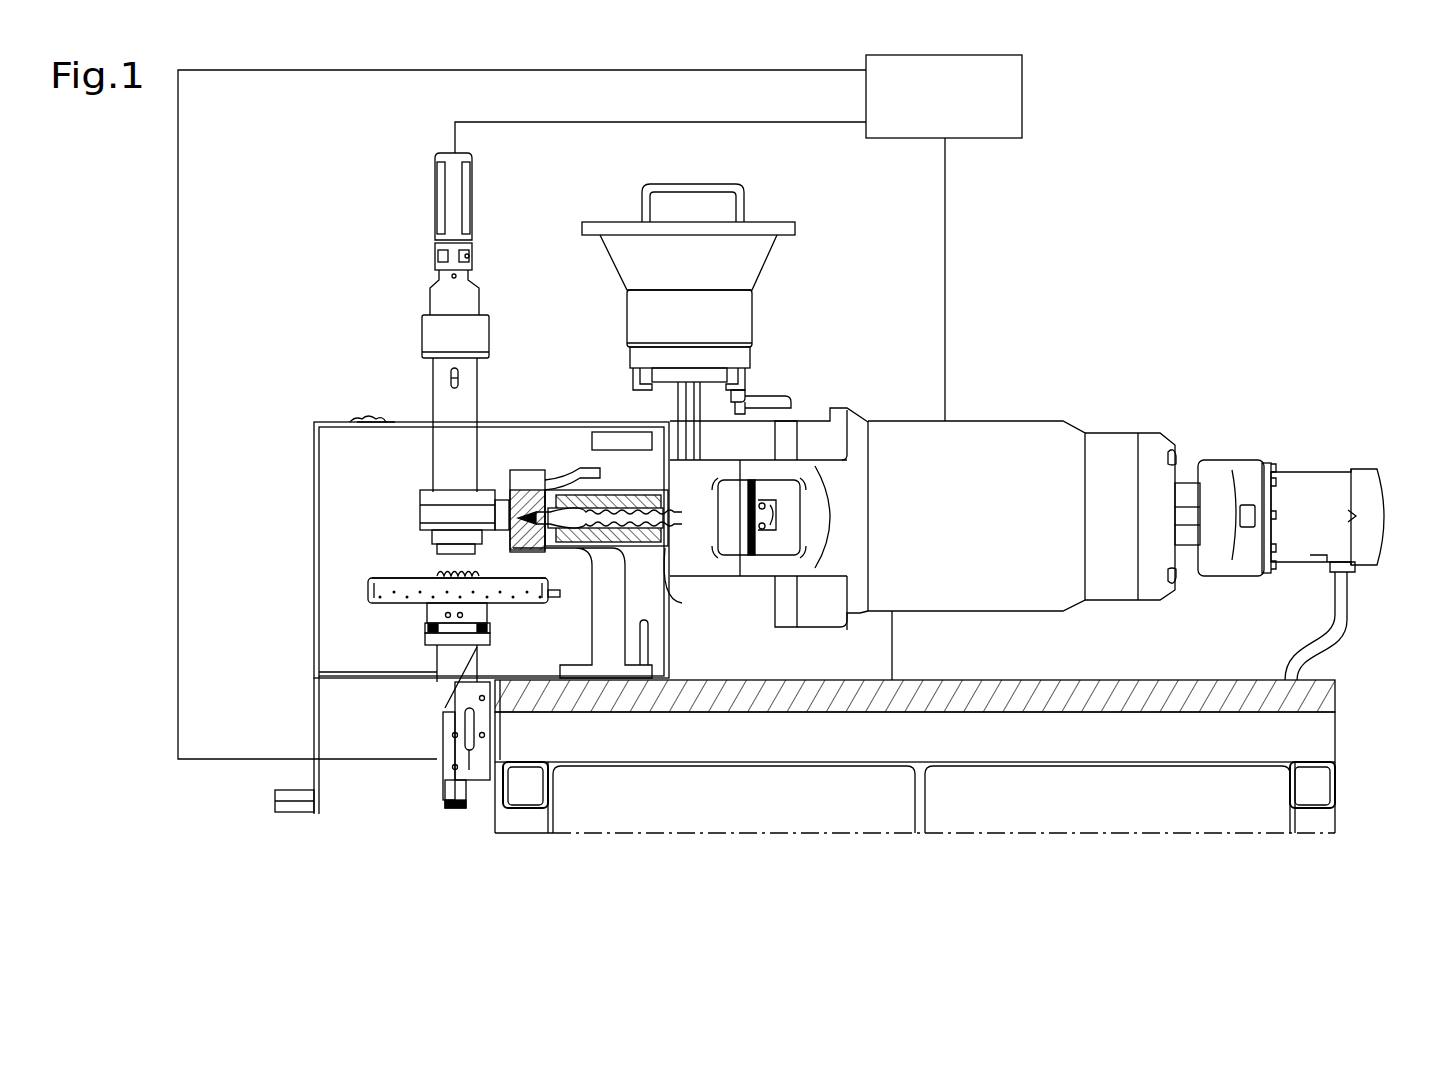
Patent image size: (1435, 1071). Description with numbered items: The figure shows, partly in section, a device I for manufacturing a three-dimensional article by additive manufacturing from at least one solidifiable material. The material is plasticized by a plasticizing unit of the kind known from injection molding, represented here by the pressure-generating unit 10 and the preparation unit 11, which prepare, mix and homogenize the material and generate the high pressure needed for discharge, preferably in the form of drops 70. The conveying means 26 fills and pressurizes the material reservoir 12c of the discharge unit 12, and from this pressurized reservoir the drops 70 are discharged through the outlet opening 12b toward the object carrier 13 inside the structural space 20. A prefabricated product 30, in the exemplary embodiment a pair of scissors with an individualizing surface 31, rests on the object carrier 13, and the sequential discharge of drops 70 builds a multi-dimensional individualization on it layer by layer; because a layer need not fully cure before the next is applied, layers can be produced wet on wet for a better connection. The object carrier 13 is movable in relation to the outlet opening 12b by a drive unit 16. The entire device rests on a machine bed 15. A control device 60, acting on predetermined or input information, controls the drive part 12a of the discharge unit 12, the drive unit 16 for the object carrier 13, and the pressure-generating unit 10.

The pressure-generating unit 10 is at (993, 421).
The preparation unit 11 is at (593, 498).
The discharge unit 12 is at (437, 332).
The drive part 12a is at (455, 196).
The outlet opening 12b is at (440, 566).
The material reservoir 12c is at (463, 492).
The object carrier 13 is at (420, 616).
The machine bed 15 is at (1308, 685).
The drive unit 16 is at (447, 770).
The structural space 20 is at (345, 502).
The conveying means 26 is at (640, 545).
The prefabricated product 30 is at (372, 577).
The individualizing surface 31 is at (420, 569).
The control device 60 is at (961, 109).
The drops 70 is at (438, 568).
The device I is at (350, 390).